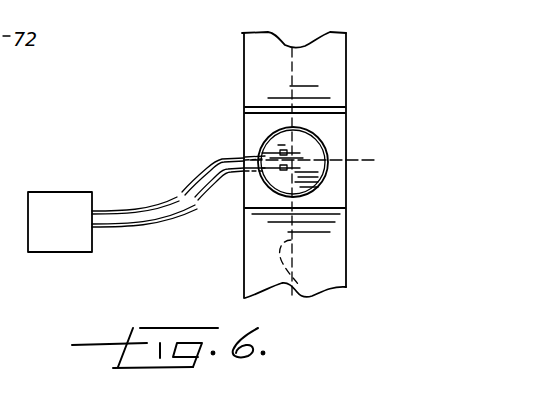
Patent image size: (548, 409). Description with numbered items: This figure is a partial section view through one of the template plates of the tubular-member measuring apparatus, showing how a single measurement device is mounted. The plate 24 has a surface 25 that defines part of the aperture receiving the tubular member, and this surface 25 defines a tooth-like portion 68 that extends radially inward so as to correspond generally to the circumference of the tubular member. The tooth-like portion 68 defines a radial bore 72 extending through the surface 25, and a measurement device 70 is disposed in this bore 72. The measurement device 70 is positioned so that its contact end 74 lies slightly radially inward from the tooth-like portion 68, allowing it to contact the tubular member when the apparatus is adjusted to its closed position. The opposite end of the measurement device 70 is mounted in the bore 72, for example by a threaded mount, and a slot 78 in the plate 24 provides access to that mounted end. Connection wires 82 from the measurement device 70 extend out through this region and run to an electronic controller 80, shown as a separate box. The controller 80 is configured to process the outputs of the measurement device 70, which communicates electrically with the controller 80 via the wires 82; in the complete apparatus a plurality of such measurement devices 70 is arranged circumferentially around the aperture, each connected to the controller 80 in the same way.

The plate 24 is at (346, 60).
The surface 25 is at (256, 62).
The tooth-like portion 68 is at (320, 108).
The measurement device 70 is at (262, 133).
The radial bore 72 is at (320, 147).
The contact end 74 is at (320, 175).
The slot 78 is at (330, 305).
The electronic controller 80 is at (67, 243).
The connection wires 82 is at (209, 167).